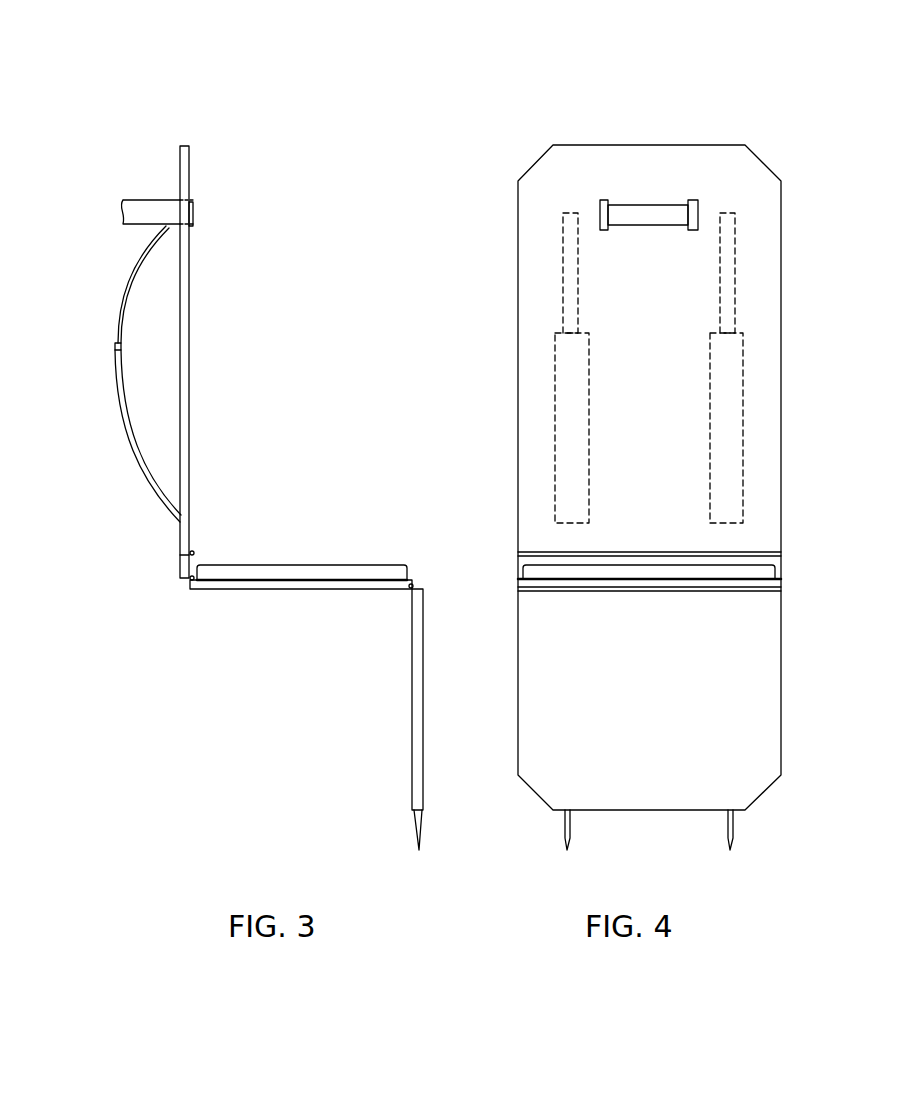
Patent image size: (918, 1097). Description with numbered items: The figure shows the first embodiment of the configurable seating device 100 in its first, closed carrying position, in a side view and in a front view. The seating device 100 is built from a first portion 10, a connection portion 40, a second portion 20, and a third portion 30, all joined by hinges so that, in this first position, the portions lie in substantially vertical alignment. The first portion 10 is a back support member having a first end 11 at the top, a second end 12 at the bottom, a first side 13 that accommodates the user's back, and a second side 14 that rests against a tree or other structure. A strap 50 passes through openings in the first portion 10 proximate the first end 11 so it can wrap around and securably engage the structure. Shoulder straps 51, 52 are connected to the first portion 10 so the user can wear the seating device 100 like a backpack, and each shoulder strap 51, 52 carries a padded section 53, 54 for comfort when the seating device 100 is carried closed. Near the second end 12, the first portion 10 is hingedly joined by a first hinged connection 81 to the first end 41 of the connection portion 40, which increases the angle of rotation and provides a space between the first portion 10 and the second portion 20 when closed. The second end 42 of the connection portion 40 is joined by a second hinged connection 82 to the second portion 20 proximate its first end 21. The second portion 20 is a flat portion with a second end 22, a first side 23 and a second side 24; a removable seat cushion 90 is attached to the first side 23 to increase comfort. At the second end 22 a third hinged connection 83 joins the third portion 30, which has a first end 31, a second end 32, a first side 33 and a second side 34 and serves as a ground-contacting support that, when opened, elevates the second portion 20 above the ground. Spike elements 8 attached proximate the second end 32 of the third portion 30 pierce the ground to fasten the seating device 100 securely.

In FIG. 3, the seating device 100 is at (200, 92).
In FIG. 4, the seating device 100 is at (597, 92).
In FIG. 3, the spike element 8 is at (416, 835).
In FIG. 4, the spike element 8 is at (565, 836).
In FIG. 3, the first portion 10 is at (190, 181).
In FIG. 4, the first portion 10 is at (735, 170).
In FIG. 3, the first end 11 is at (218, 152).
In FIG. 3, the second end 12 is at (166, 533).
In FIG. 3, the first side 13 is at (190, 311).
In FIG. 4, the first side 13 is at (568, 187).
In FIG. 3, the second side 14 is at (180, 353).
In FIG. 3, the second portion 20 is at (309, 590).
In FIG. 4, the second portion 20 is at (700, 586).
In FIG. 3, the first end 21 is at (201, 597).
In FIG. 3, the second end 22 is at (400, 549).
In FIG. 3, the first side 23 is at (413, 578).
In FIG. 3, the second side 24 is at (369, 594).
In FIG. 3, the third portion 30 is at (415, 722).
In FIG. 4, the third portion 30 is at (617, 790).
In FIG. 3, the first end 31 is at (407, 603).
In FIG. 3, the second end 32 is at (398, 793).
In FIG. 3, the first side 33 is at (424, 635).
In FIG. 4, the first side 33 is at (730, 775).
In FIG. 3, the second side 34 is at (414, 688).
In FIG. 3, the connection portion 40 is at (182, 567).
In FIG. 4, the connection portion 40 is at (773, 559).
In FIG. 3, the first end 41 is at (173, 556).
In FIG. 3, the second end 42 is at (178, 582).
In FIG. 3, the strap 50 is at (150, 208).
In FIG. 4, the strap 50 is at (648, 212).
In FIG. 4, the shoulder strap 51 is at (735, 276).
In FIG. 3, the shoulder strap 52 is at (128, 268).
In FIG. 4, the shoulder strap 52 is at (572, 253).
In FIG. 3, the padded section 53 is at (78, 485).
In FIG. 4, the padded section 53 is at (735, 395).
In FIG. 3, the padded section 54 is at (127, 425).
In FIG. 4, the padded section 54 is at (572, 398).
In FIG. 3, the first hinged connection 81 is at (193, 553).
In FIG. 3, the second hinged connection 82 is at (185, 592).
In FIG. 3, the third hinged connection 83 is at (415, 590).
In FIG. 3, the removable seat cushion 90 is at (257, 577).
In FIG. 4, the removable seat cushion 90 is at (548, 568).